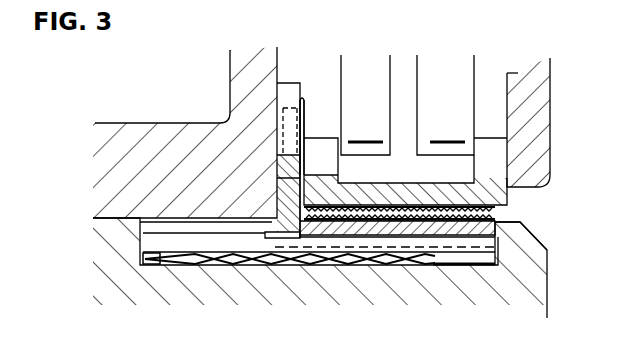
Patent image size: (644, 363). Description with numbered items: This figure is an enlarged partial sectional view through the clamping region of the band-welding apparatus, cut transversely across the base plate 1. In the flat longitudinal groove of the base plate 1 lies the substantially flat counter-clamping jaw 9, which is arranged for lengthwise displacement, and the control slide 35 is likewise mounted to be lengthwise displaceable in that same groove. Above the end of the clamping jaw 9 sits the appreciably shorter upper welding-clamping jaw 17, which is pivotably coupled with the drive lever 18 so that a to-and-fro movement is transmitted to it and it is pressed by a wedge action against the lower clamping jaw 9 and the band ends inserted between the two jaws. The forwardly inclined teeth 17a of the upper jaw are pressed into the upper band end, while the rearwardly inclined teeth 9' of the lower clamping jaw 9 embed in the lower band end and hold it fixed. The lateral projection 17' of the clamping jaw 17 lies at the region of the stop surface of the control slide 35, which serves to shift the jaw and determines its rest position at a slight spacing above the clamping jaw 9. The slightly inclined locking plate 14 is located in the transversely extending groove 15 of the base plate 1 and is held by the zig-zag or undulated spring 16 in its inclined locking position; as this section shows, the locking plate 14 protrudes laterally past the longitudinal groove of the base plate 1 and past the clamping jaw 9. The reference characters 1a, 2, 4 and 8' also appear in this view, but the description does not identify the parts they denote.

The base plate 1 is at (514, 295).
The shoulder of housing base 1a is at (543, 240).
The housing wall 2 is at (247, 90).
The cover 4 is at (552, 100).
The sealing ring 8' is at (385, 298).
The counter-clamping jaw 9 is at (439, 226).
The rearwardly inclined teeth 9' is at (399, 282).
The locking plate 14 is at (345, 240).
The transversely extending groove 15 is at (150, 262).
The zig-zag or undulated spring 16 is at (233, 262).
The upper welding-clamping jaw 17 is at (441, 168).
The lateral projection 17' is at (319, 127).
The forwardly inclined teeth 17a is at (484, 211).
The drive lever 18 is at (409, 83).
The control slide 35 is at (287, 183).